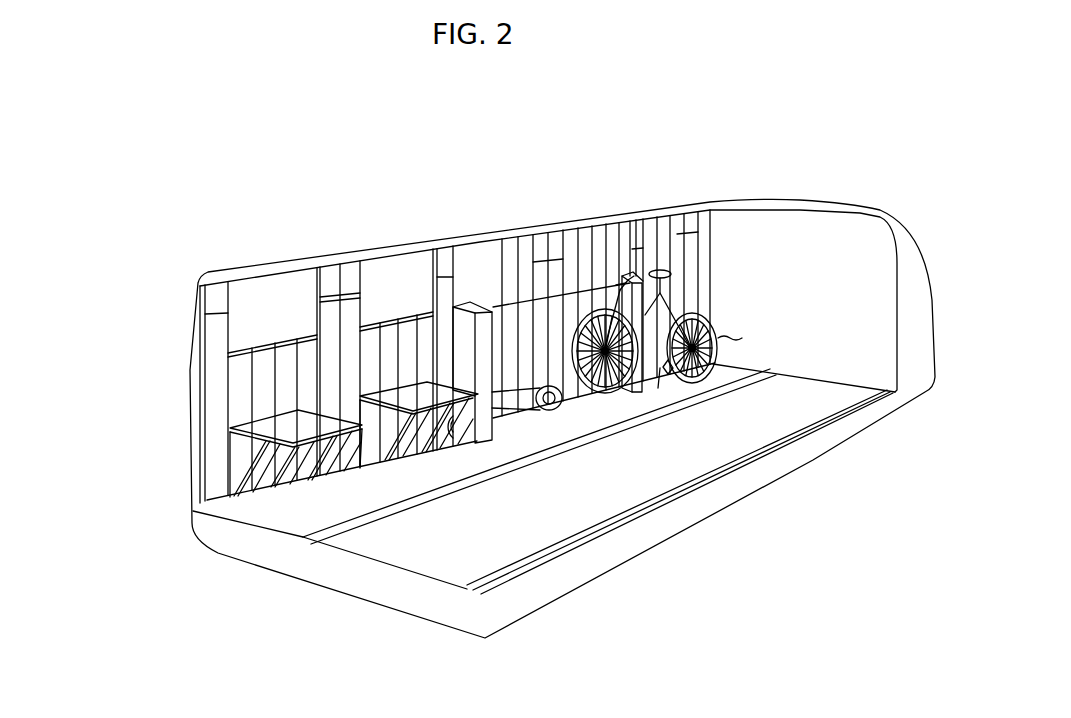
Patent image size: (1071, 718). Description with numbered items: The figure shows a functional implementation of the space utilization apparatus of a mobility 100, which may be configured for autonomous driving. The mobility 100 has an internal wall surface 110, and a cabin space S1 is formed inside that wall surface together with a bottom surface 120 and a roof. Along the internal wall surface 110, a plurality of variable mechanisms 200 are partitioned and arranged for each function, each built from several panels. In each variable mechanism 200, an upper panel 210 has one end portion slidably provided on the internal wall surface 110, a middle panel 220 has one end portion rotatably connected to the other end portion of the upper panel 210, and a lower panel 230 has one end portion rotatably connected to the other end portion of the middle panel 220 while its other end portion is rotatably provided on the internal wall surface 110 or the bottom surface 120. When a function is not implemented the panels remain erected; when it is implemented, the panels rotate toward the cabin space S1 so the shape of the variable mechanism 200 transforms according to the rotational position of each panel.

The mobility 100 is at (619, 200).
The cabin space S1 is at (729, 337).
The internal wall surface 110 is at (195, 437).
The bottom surface 120 is at (467, 462).
The variable mechanism 200 is at (297, 495).
The upper panel 210 is at (473, 303).
The middle panel 220 is at (240, 432).
The lower panel 230 is at (250, 480).